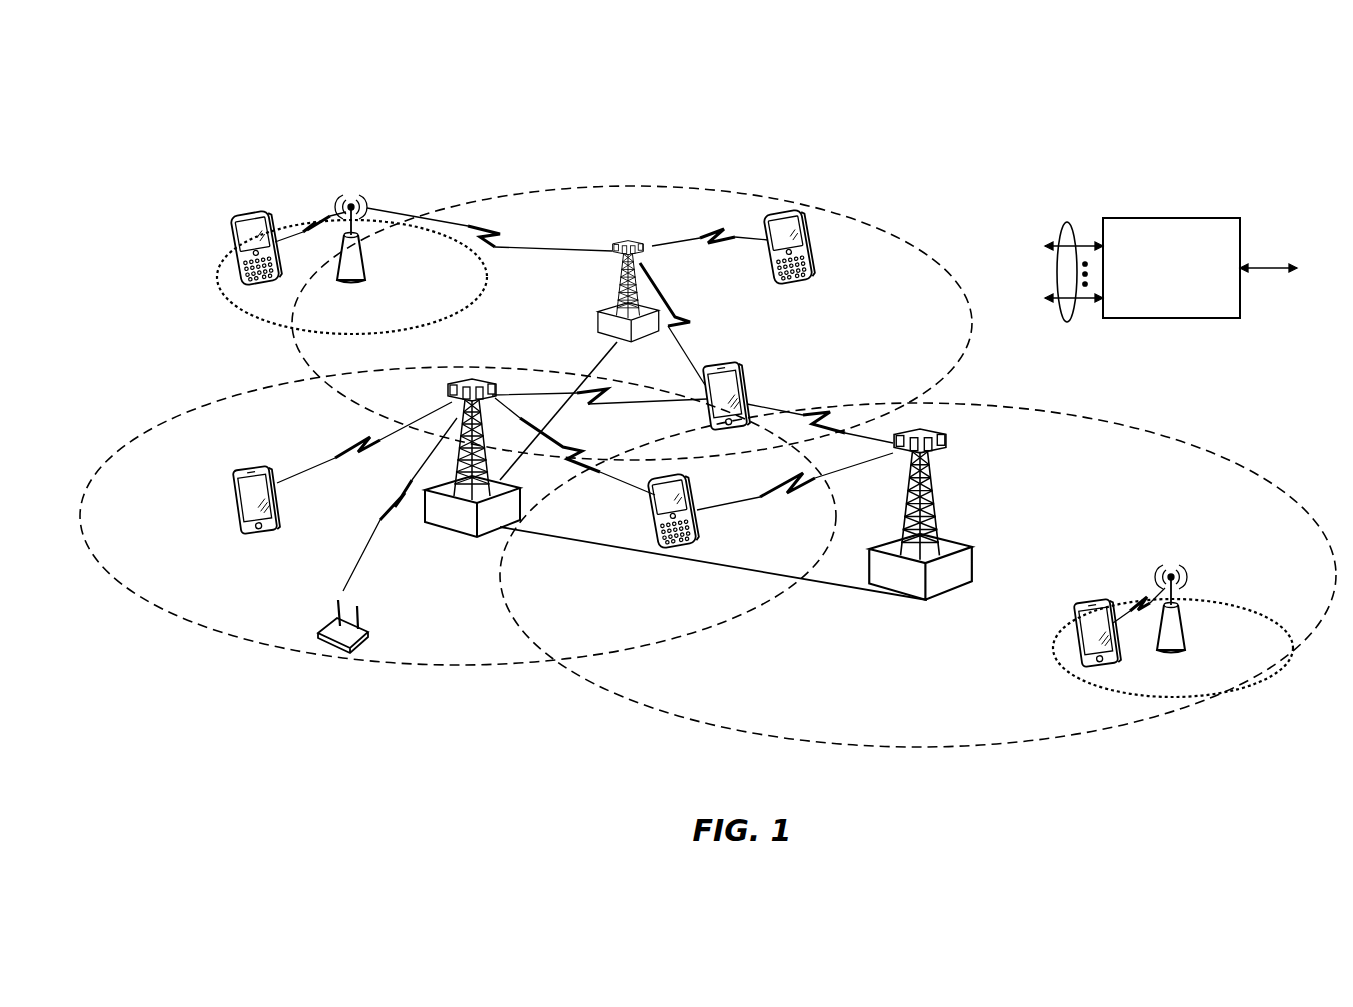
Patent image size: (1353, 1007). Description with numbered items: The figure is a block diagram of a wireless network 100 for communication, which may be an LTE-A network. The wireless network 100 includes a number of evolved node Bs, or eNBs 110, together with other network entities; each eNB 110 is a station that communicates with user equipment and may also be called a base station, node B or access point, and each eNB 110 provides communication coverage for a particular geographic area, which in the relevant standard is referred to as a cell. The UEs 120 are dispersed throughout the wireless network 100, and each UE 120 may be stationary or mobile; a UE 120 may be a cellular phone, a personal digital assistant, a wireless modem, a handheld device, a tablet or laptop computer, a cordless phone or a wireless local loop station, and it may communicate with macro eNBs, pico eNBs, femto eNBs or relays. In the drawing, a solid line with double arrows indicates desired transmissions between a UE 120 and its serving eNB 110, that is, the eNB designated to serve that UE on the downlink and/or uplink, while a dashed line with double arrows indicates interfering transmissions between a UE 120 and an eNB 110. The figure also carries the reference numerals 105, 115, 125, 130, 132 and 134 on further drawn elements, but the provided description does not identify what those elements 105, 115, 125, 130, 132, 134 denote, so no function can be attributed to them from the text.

The wireless network 100 is at (1225, 112).
The base station 105 is at (365, 281).
The evolved node B (eNB) 110 is at (735, 187).
The user equipment (UE) 115 is at (244, 229).
The UE 120 is at (343, 626).
The communication link 125 is at (311, 222).
The core network 130 is at (1160, 217).
The backhaul links 132 is at (1069, 223).
The backhaul link between base stations 134 is at (594, 368).